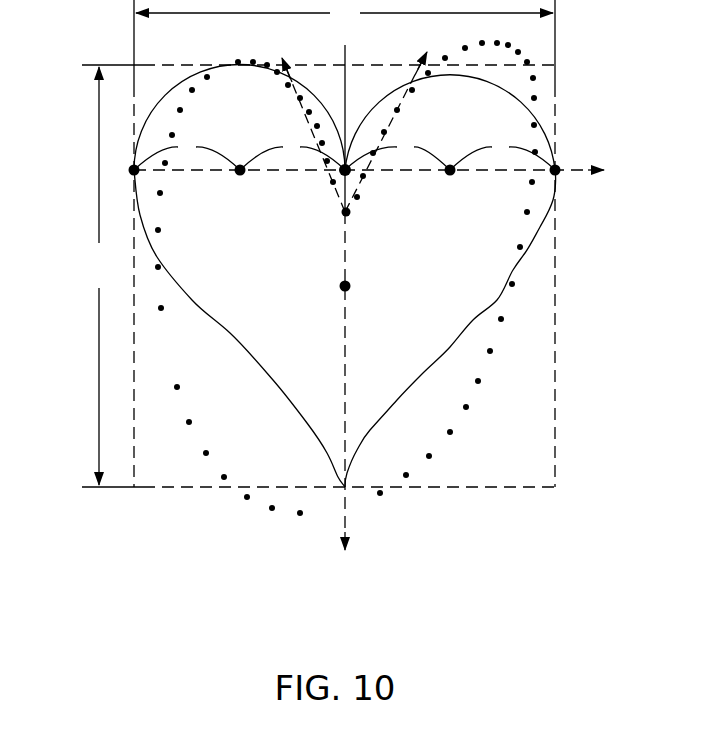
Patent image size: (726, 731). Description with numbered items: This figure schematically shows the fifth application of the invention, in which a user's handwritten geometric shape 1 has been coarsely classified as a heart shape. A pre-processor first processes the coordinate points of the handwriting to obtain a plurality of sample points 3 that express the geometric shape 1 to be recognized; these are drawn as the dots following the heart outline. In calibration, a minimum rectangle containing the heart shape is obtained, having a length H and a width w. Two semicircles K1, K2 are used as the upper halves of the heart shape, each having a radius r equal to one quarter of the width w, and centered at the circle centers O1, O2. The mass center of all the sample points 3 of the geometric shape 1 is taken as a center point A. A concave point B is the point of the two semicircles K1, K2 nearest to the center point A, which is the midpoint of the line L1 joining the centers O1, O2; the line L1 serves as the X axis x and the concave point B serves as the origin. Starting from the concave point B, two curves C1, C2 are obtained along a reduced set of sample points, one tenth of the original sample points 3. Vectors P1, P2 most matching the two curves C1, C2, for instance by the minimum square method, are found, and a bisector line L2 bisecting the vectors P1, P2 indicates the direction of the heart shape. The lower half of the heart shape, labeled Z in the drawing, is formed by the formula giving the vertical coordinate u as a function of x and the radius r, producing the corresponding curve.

The geometric figure 1 is at (486, 386).
The sample points 3 is at (470, 409).
The semicircle K1 is at (176, 83).
The semicircle K2 is at (543, 112).
The vector P1 is at (278, 55).
The vector P2 is at (427, 52).
The curve C1 is at (311, 110).
The curve C2 is at (389, 120).
The line L1 is at (305, 139).
The bisector line L2 is at (392, 118).
The circle center O1 is at (241, 184).
The circle center O2 is at (452, 184).
The center point A is at (354, 291).
The concave point B is at (353, 182).
The heart-shaped curve Z is at (233, 342).
The length H is at (99, 276).
The width w is at (344, 13).
The X axis x is at (375, 171).
The vertical coordinate u(x) u is at (366, 302).
The radius r is at (344, 156).